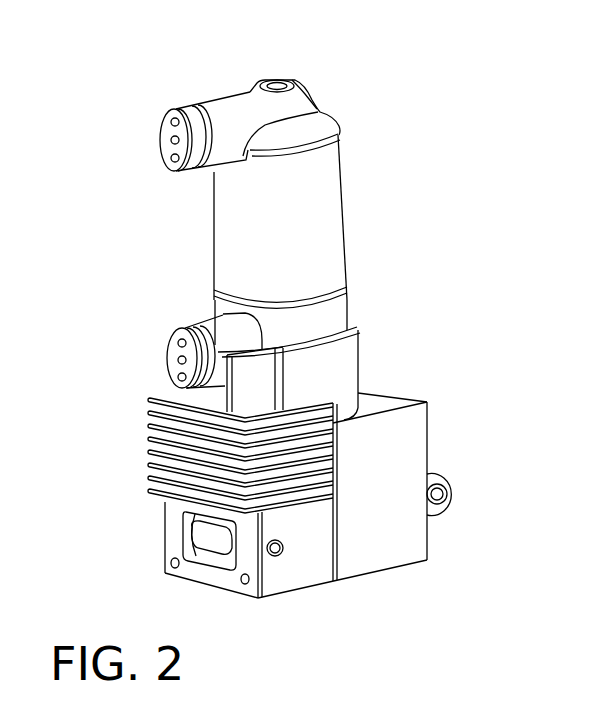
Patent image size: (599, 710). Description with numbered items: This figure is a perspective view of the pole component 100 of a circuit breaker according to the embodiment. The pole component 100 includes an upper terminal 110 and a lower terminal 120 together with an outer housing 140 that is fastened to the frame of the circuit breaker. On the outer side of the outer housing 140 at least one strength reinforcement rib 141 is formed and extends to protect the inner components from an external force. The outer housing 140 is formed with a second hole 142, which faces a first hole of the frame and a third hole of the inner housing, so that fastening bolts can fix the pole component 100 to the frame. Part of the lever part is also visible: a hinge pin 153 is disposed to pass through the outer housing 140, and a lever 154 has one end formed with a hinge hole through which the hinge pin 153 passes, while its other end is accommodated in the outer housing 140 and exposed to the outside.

The pole component 100 is at (166, 37).
The upper terminal 110 is at (160, 143).
The lower terminal 120 is at (165, 360).
The outer housing 140 is at (222, 248).
The strength reinforcement rib 141 is at (160, 443).
The second hole 142 is at (170, 562).
The hinge pin 153 is at (207, 530).
The lever 154 is at (447, 495).